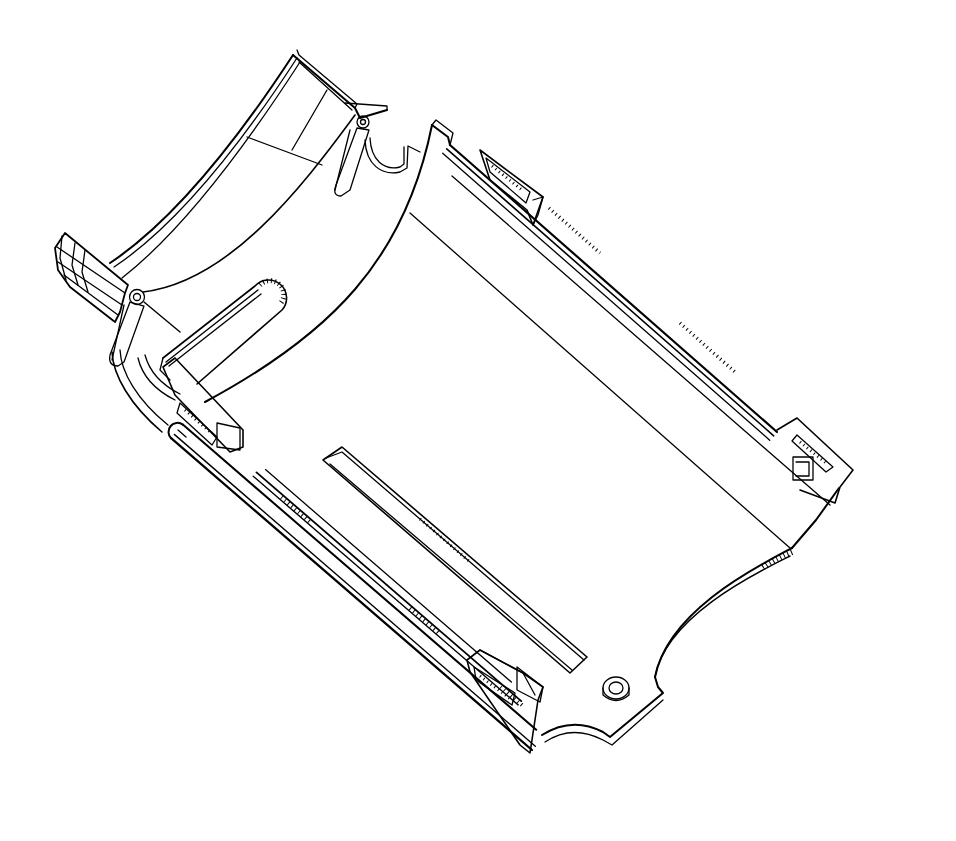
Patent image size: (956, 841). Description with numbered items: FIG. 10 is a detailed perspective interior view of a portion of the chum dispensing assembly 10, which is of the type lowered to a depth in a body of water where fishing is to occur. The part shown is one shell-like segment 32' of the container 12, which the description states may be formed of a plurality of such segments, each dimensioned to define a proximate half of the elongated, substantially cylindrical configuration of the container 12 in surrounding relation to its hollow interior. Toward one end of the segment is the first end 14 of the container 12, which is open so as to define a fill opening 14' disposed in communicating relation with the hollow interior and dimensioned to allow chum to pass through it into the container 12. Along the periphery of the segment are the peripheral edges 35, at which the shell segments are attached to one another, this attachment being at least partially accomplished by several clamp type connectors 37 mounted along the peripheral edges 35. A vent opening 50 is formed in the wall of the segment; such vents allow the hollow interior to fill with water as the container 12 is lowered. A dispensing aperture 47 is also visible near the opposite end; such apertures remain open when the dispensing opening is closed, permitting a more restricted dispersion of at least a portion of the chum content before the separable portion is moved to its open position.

The chum dispensing assembly 10 is at (600, 176).
The container 12 is at (720, 338).
The first end 14 is at (221, 198).
The fill opening 14' is at (203, 148).
The shell-like segment 32' is at (387, 588).
The peripheral edge 35 is at (623, 295).
The clamp type connector 37 is at (486, 154).
The dispensing aperture 47 is at (723, 588).
The vent opening 50 is at (240, 355).